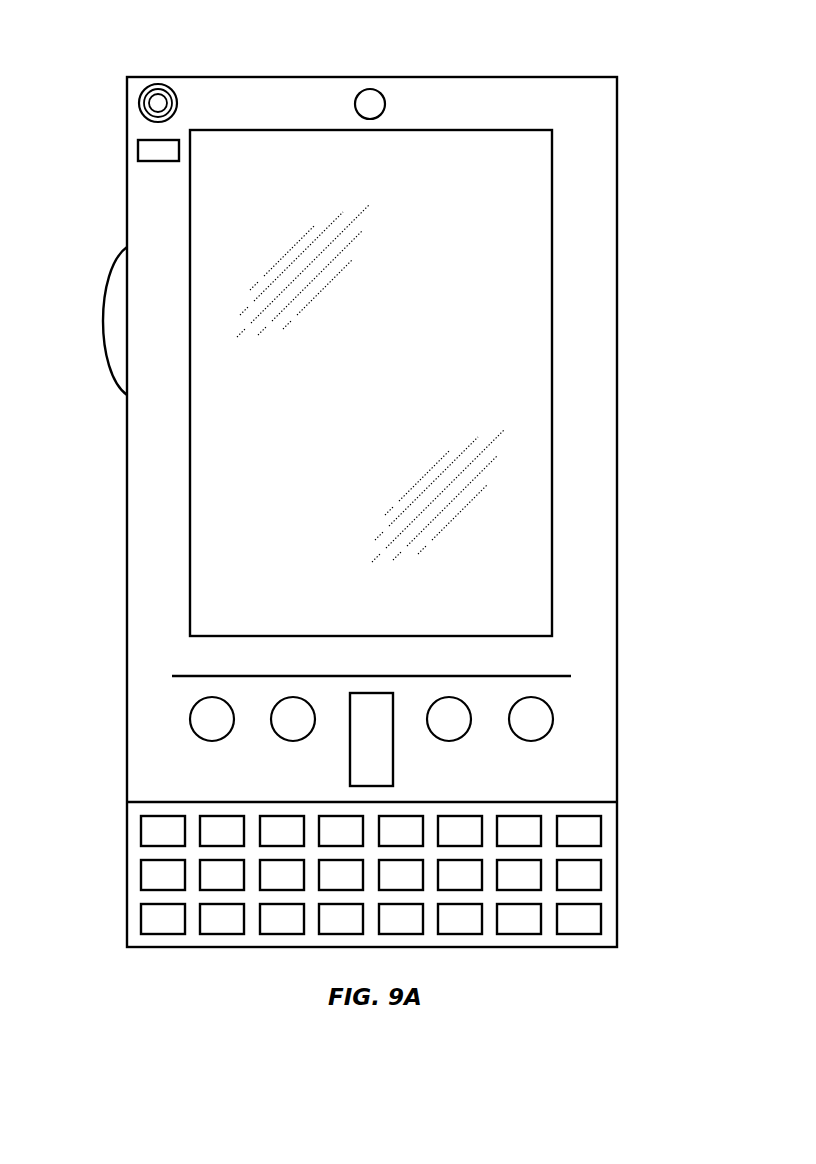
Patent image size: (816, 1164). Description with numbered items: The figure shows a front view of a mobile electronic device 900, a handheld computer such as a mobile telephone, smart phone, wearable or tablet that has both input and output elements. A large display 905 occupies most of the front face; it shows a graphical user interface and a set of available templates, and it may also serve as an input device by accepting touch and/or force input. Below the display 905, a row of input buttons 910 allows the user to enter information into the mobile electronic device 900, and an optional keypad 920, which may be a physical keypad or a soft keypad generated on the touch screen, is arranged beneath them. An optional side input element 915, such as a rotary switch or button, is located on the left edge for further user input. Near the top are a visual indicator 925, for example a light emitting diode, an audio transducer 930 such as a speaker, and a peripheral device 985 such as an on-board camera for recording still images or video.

The mobile electronic device 900 is at (617, 170).
The display 905 is at (218, 491).
The input buttons 910 is at (350, 765).
The side input element 915 is at (103, 325).
The keypad 920 is at (134, 882).
The visual indicator 925 is at (138, 153).
The audio transducer 930 is at (139, 104).
The peripheral device 985 is at (371, 88).